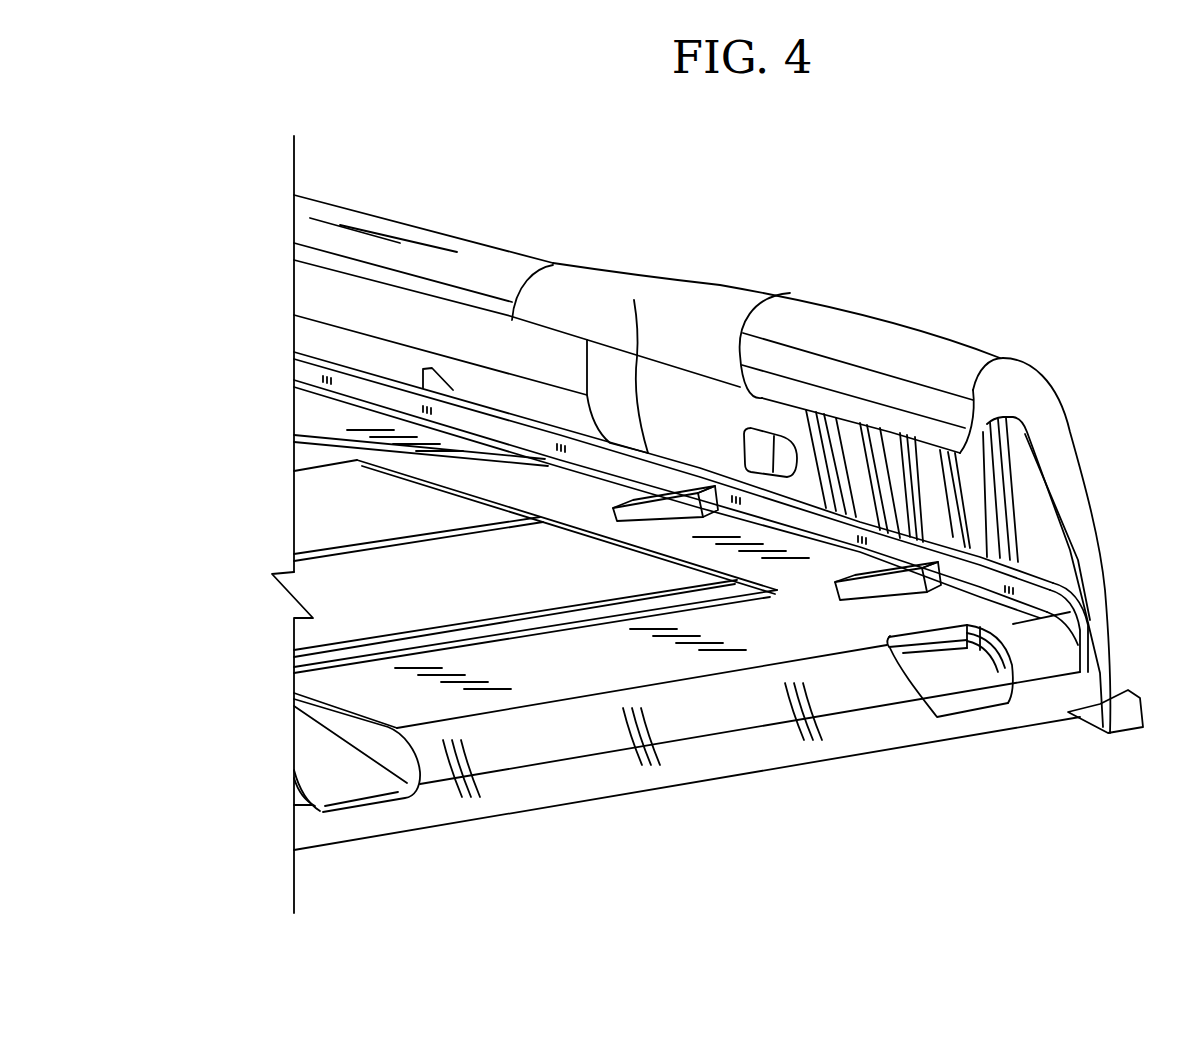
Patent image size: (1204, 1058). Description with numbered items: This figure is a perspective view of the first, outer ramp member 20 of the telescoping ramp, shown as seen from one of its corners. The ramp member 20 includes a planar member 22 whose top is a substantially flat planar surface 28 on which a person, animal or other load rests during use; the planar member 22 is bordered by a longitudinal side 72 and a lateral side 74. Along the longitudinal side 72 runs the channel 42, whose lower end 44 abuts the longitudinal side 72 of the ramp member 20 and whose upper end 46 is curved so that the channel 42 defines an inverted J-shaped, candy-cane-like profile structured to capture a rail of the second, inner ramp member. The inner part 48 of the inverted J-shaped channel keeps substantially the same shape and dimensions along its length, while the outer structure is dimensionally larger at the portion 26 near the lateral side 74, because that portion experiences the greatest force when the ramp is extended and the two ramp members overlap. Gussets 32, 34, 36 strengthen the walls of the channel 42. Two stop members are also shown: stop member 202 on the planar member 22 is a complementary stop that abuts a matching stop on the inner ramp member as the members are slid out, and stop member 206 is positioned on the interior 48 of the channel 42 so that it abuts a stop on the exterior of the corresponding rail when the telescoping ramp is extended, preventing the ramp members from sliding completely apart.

The first ramp member 20 is at (555, 821).
The planar member 22 is at (472, 580).
The dimensionally larger portion of channel 26 is at (781, 307).
The planar surface 28 is at (342, 589).
The gusset 32 is at (803, 407).
The gusset 34 is at (853, 413).
The gusset 36 is at (953, 537).
The channel 42 is at (480, 242).
The lower end of channel 44 is at (1121, 671).
The upper end of channel 46 is at (1026, 377).
The inner part of channel 48 is at (1043, 478).
The longitudinal side 72 is at (634, 300).
The lateral side 74 is at (735, 757).
The stop member 202 is at (866, 602).
The stop member 206 is at (742, 427).